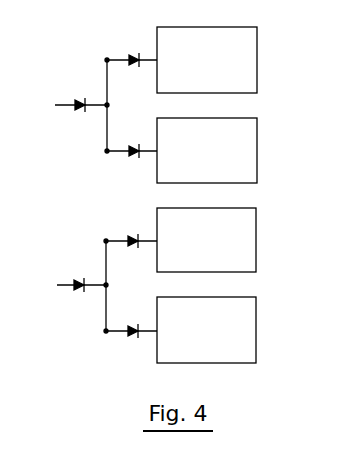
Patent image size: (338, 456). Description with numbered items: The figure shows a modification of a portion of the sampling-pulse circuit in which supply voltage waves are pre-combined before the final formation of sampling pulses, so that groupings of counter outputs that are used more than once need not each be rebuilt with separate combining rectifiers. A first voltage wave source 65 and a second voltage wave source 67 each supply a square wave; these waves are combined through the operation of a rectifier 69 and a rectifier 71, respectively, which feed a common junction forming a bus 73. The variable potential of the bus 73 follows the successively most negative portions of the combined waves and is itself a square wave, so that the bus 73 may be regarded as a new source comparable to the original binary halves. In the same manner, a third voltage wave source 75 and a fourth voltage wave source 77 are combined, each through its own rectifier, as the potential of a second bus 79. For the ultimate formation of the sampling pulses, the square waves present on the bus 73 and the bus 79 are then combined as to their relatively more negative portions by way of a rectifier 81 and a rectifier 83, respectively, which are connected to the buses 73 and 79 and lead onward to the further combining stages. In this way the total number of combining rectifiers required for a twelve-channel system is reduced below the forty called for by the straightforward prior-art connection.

The voltage wave source 65 is at (183, 23).
The voltage wave source 67 is at (228, 118).
The rectifier 69 is at (139, 56).
The rectifier 71 is at (138, 155).
The bus 73 is at (104, 119).
The voltage wave source 75 is at (230, 208).
The voltage wave source 77 is at (230, 297).
The bus 79 is at (101, 302).
The rectifier 81 is at (86, 98).
The rectifier 83 is at (83, 279).